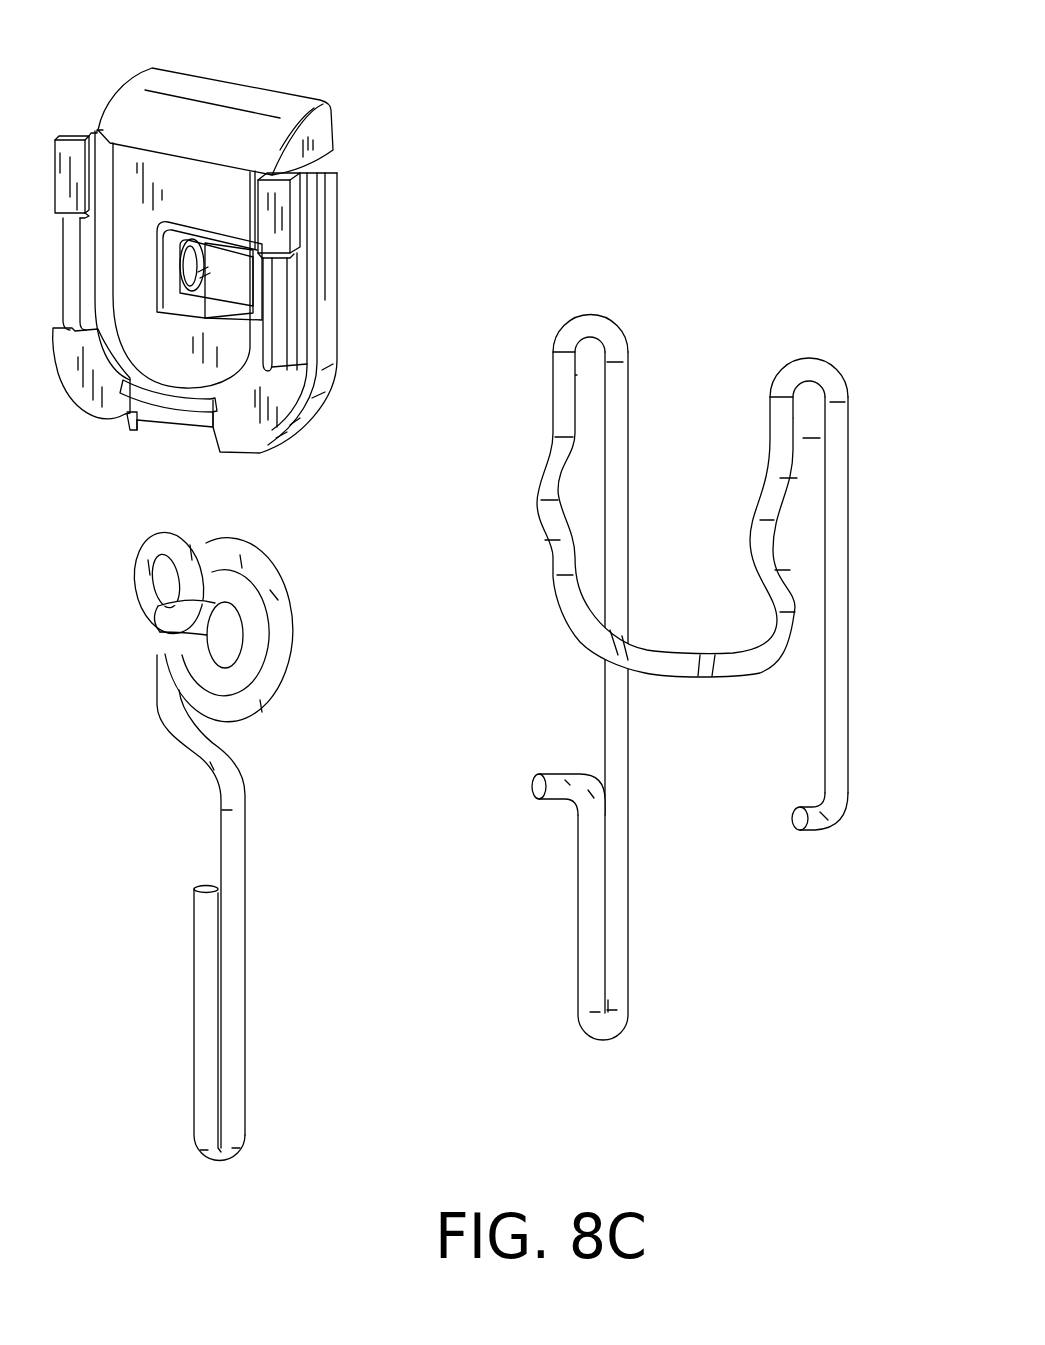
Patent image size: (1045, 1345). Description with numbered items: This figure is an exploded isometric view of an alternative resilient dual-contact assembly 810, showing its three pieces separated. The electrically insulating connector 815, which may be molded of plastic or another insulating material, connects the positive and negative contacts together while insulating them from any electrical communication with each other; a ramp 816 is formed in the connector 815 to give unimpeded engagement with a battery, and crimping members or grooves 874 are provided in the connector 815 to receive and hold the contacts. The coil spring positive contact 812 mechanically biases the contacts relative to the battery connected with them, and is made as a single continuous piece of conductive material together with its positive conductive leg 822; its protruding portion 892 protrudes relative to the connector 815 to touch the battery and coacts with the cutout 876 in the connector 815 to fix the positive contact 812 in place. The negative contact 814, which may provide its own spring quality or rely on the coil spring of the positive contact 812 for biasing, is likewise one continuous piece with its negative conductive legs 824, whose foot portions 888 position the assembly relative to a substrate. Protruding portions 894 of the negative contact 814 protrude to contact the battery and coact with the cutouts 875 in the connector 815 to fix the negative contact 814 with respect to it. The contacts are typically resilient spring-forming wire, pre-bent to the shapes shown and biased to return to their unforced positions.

The dual-contact assembly 810 is at (702, 102).
The coil spring positive contact 812 is at (256, 654).
The negative contact 814 is at (552, 457).
The electrically insulating connector 815 is at (223, 187).
The ramp 816 is at (243, 94).
The positive conductive leg 822 is at (231, 989).
The negative conductive leg 824 is at (837, 693).
The crimping members or grooves 874 is at (85, 137).
The cutout 875 is at (57, 267).
The cutout 876 is at (239, 283).
The foot portion 888 is at (567, 793).
The protruding portion 892 is at (140, 563).
The protruding portion 894 is at (547, 495).